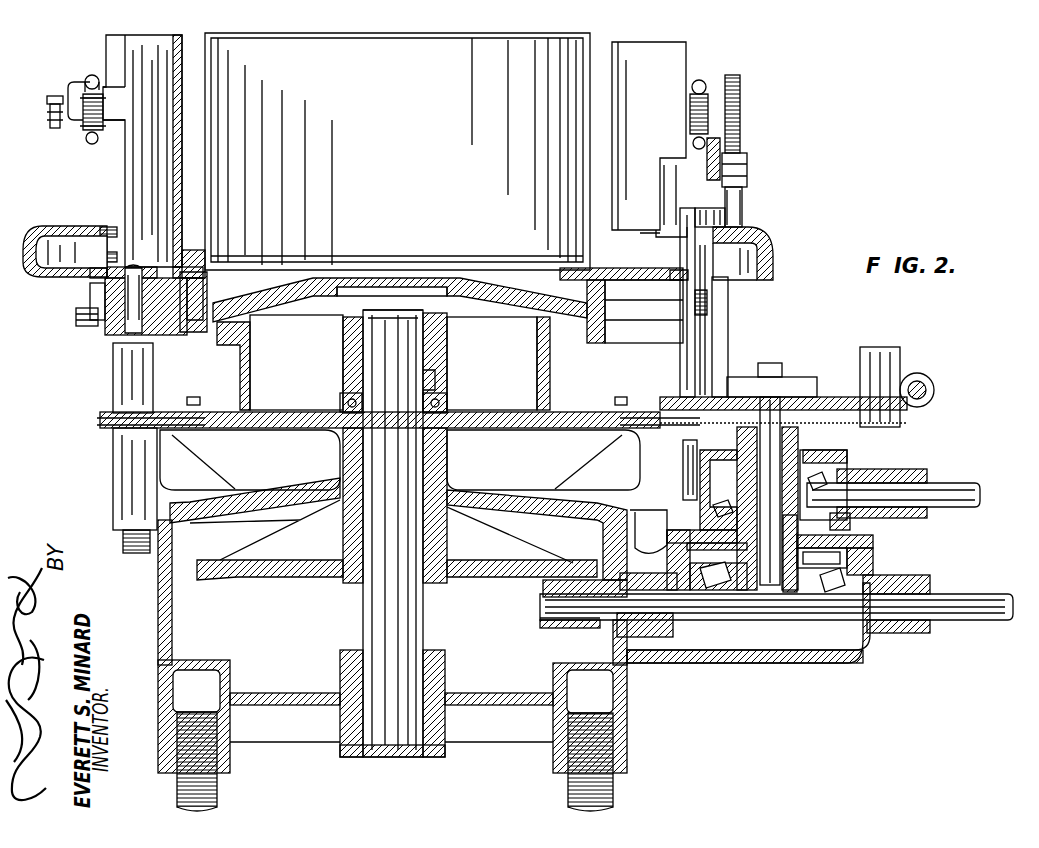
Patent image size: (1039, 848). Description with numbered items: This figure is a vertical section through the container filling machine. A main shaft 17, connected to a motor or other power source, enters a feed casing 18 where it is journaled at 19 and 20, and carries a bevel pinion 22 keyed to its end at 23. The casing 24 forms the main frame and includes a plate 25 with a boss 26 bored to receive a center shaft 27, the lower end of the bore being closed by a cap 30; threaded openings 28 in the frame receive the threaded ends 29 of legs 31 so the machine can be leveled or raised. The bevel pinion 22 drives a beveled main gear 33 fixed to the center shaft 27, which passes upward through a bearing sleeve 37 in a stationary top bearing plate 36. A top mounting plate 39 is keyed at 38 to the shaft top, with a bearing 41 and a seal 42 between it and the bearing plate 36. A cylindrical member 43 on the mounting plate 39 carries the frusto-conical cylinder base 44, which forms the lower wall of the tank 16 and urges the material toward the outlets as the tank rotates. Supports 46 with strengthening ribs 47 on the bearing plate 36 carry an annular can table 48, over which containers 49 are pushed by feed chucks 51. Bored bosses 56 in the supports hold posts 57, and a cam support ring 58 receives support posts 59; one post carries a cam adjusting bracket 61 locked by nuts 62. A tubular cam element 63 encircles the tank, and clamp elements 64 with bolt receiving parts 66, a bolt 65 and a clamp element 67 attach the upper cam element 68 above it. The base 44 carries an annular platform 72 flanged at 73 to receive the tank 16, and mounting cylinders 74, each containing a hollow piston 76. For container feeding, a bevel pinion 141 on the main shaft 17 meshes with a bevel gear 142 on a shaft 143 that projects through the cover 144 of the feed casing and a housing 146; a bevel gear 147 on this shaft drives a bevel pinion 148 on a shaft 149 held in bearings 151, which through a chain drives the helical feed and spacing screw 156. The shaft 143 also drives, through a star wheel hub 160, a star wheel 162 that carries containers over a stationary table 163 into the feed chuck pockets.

The tank 16 is at (397, 151).
The main shaft 17 is at (963, 615).
The feed casing 18 is at (778, 664).
The journal 19 is at (900, 636).
The journal 20 is at (652, 625).
The bevel pinion 22 is at (567, 628).
The key 23 is at (543, 618).
The casing 24 is at (626, 703).
The plate 25 is at (502, 695).
The boss 26 is at (442, 675).
The center shaft 27 is at (378, 617).
The threaded openings 28 is at (180, 755).
The threaded ends 29 is at (196, 727).
The cap 30 is at (405, 756).
The legs 31 is at (210, 793).
The bevel main gear 33 is at (479, 574).
The top bearing plate 36 is at (490, 492).
The bearing sleeve 37 is at (343, 462).
The key 38 is at (370, 320).
The top mounting plate 39 is at (440, 350).
The bearing 41 is at (345, 378).
The seal 42 is at (452, 419).
The cylindrical member 43 is at (549, 366).
The cylinder base 44 is at (506, 285).
The supports 46 is at (195, 482).
The strengthening ribs 47 is at (230, 474).
The can table 48 is at (100, 422).
The containers 49 is at (125, 364).
The feed chucks 51 is at (178, 404).
The bored bosses 56 is at (128, 513).
The posts 57 is at (128, 543).
The cam support ring 58 is at (770, 246).
The support posts 59 is at (735, 212).
The cam adjusting bracket 61 is at (747, 180).
The nuts 62 is at (740, 155).
The cam element 63 is at (92, 145).
The clamp elements 64 is at (85, 132).
The bolt 65 is at (50, 108).
The bolt receiving parts 66 is at (52, 120).
The clamp element 67 is at (72, 84).
The upper cam element 68 is at (92, 74).
The platform 72 is at (228, 290).
The flange 73 is at (222, 276).
The cylinders 74 is at (180, 86).
The piston 76 is at (150, 108).
The bevel pinion 141 is at (710, 627).
The bevel gear 142 is at (860, 570).
The shaft 143 is at (765, 470).
The cover 144 is at (872, 548).
The housing 146 is at (848, 457).
The bevel gear 147 is at (725, 505).
The bevel pinion 148 is at (817, 472).
The shaft 149 is at (960, 488).
The bearings 151 is at (920, 510).
The container feed and spacing screw 156 is at (920, 380).
The star wheel hub 160 is at (790, 376).
The star wheel 162 is at (847, 396).
The stationary table 163 is at (900, 422).